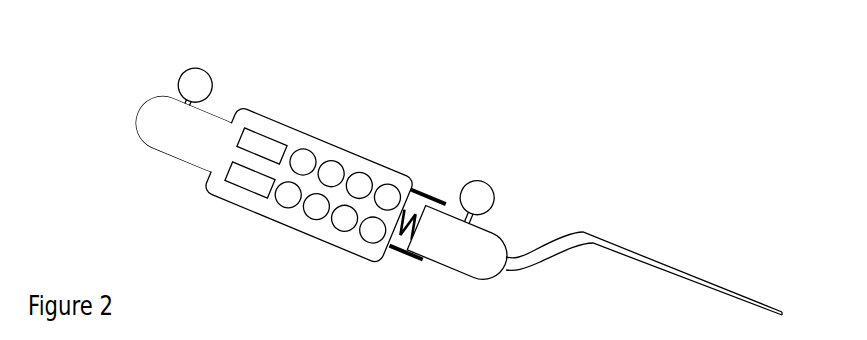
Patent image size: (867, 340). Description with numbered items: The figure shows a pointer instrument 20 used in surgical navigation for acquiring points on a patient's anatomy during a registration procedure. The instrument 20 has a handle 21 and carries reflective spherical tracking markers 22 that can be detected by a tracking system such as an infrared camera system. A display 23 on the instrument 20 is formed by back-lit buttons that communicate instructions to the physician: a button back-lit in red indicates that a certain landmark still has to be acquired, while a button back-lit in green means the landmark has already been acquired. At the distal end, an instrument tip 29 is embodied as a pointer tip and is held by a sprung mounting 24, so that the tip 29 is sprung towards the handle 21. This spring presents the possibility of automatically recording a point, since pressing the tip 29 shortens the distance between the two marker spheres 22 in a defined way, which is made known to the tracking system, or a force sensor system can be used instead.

The surgical instrument 20 is at (373, 142).
The handle 21 is at (177, 137).
The markers 22 is at (189, 70).
The display 23 is at (248, 190).
The sprung mounting 24 is at (400, 258).
The instrument tip 29 is at (643, 255).